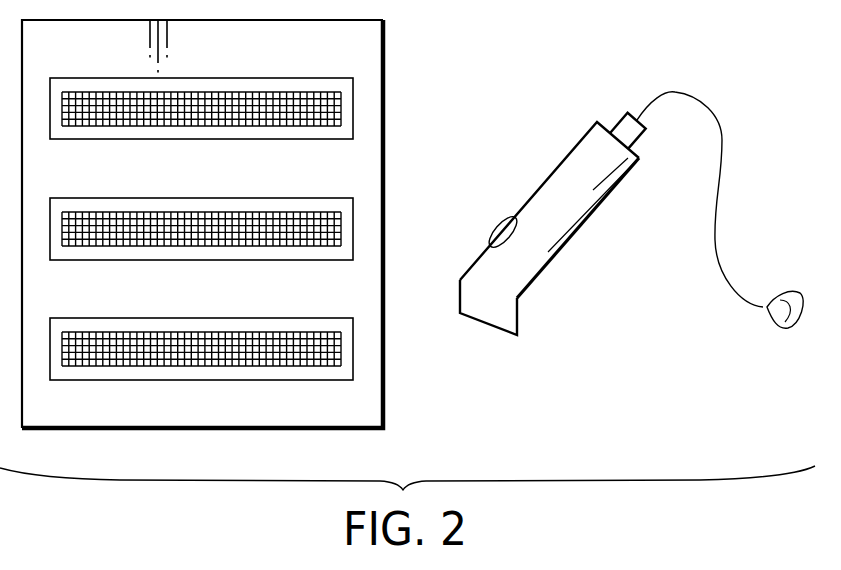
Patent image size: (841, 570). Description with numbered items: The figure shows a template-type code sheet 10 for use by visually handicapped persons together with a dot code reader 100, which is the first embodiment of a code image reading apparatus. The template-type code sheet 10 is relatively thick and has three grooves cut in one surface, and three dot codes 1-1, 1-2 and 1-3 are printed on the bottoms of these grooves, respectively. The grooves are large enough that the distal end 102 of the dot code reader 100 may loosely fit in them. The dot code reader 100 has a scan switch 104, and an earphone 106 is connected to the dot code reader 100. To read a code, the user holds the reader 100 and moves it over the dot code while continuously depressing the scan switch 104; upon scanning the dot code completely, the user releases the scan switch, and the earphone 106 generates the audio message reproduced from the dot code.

The template-type code sheet 10 is at (385, 44).
The dot code 1-1 is at (341, 105).
The dot code 1-2 is at (341, 223).
The dot code 1-3 is at (341, 345).
The dot code reader 100 is at (563, 258).
The distal end 102 is at (507, 337).
The scan switch 104 is at (505, 216).
The earphone 106 is at (778, 329).